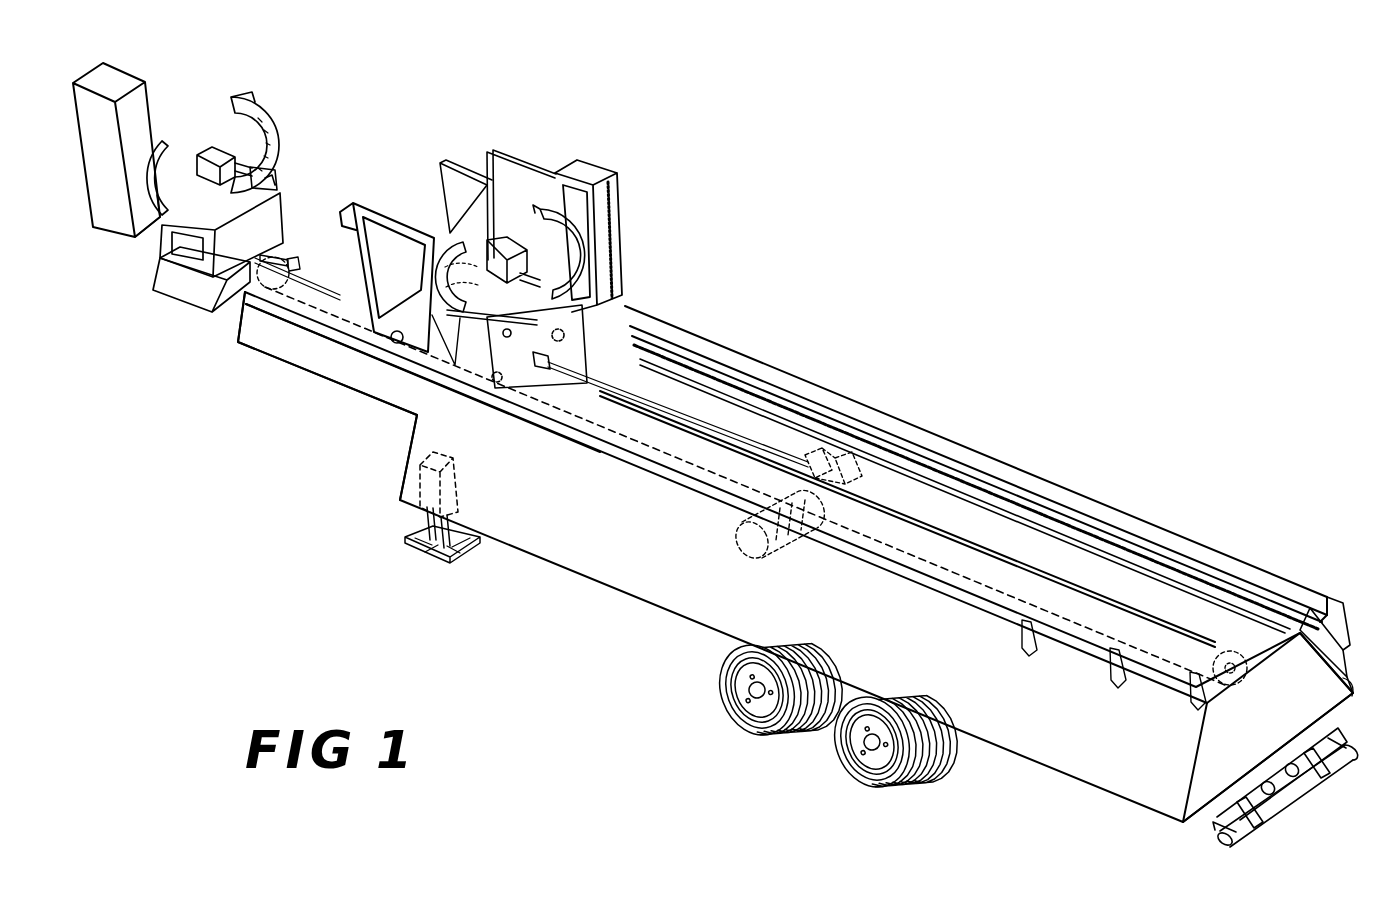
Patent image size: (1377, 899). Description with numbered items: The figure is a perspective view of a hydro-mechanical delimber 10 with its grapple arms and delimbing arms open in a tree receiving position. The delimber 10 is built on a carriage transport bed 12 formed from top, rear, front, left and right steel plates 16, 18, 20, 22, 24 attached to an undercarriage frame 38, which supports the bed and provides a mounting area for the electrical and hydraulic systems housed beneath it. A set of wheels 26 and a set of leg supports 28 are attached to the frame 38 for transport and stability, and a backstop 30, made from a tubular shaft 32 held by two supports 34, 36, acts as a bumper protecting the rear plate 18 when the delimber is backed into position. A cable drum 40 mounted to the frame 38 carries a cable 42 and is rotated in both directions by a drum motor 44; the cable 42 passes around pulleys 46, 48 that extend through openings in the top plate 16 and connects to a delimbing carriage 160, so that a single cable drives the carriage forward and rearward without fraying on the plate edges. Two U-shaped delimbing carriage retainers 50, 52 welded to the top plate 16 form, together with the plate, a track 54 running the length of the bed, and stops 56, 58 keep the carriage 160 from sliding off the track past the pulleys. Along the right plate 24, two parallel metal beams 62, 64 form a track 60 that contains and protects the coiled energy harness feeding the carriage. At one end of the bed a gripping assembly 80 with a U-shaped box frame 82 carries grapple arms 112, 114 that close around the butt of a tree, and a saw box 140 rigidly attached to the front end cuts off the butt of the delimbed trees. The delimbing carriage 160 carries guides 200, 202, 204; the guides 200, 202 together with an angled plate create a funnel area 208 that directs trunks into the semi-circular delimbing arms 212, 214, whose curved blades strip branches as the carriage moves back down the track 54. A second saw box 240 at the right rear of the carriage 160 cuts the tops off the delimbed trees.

The hydro-mechanical delimber 10 is at (842, 214).
The carriage transport bed 12 is at (343, 390).
The top plate 16 is at (750, 417).
The rear plate 18 is at (1262, 752).
The front plate 20 is at (410, 445).
The left plate 22 is at (580, 517).
The right plate 24 is at (1347, 680).
The wheels 26 is at (723, 705).
The leg supports 28 is at (430, 555).
The backstop 30 is at (1292, 811).
The tubular shaft 32 is at (1337, 743).
The support 34 is at (1267, 823).
The support 36 is at (1327, 777).
The undercarriage frame 38 is at (1220, 827).
The cable drum 40 is at (740, 540).
The cable 42 is at (300, 268).
The drum motor 44 is at (850, 467).
The pulley 46 is at (275, 256).
The pulley 48 is at (1237, 660).
The delimbing carriage retainer 50 is at (917, 573).
The delimbing carriage retainer 52 is at (1033, 507).
The track 54 is at (947, 506).
The stop 56 is at (300, 256).
The stop 58 is at (1177, 650).
The track 60 is at (1322, 622).
The metal beam 62 is at (1272, 577).
The metal beam 64 is at (1337, 640).
The gripping assembly 80 is at (209, 121).
The box frame 82 is at (281, 165).
The grapple arm 112 is at (140, 203).
The grapple arm 114 is at (290, 90).
The saw box 140 is at (147, 82).
The delimbing carriage 160 is at (493, 146).
The guide 200 is at (416, 279).
The guide 202 is at (443, 187).
The guide 204 is at (518, 172).
The funnel area 208 is at (403, 186).
The delimbing arm 212 is at (455, 228).
The delimbing arm 214 is at (553, 205).
The saw box 240 is at (593, 159).